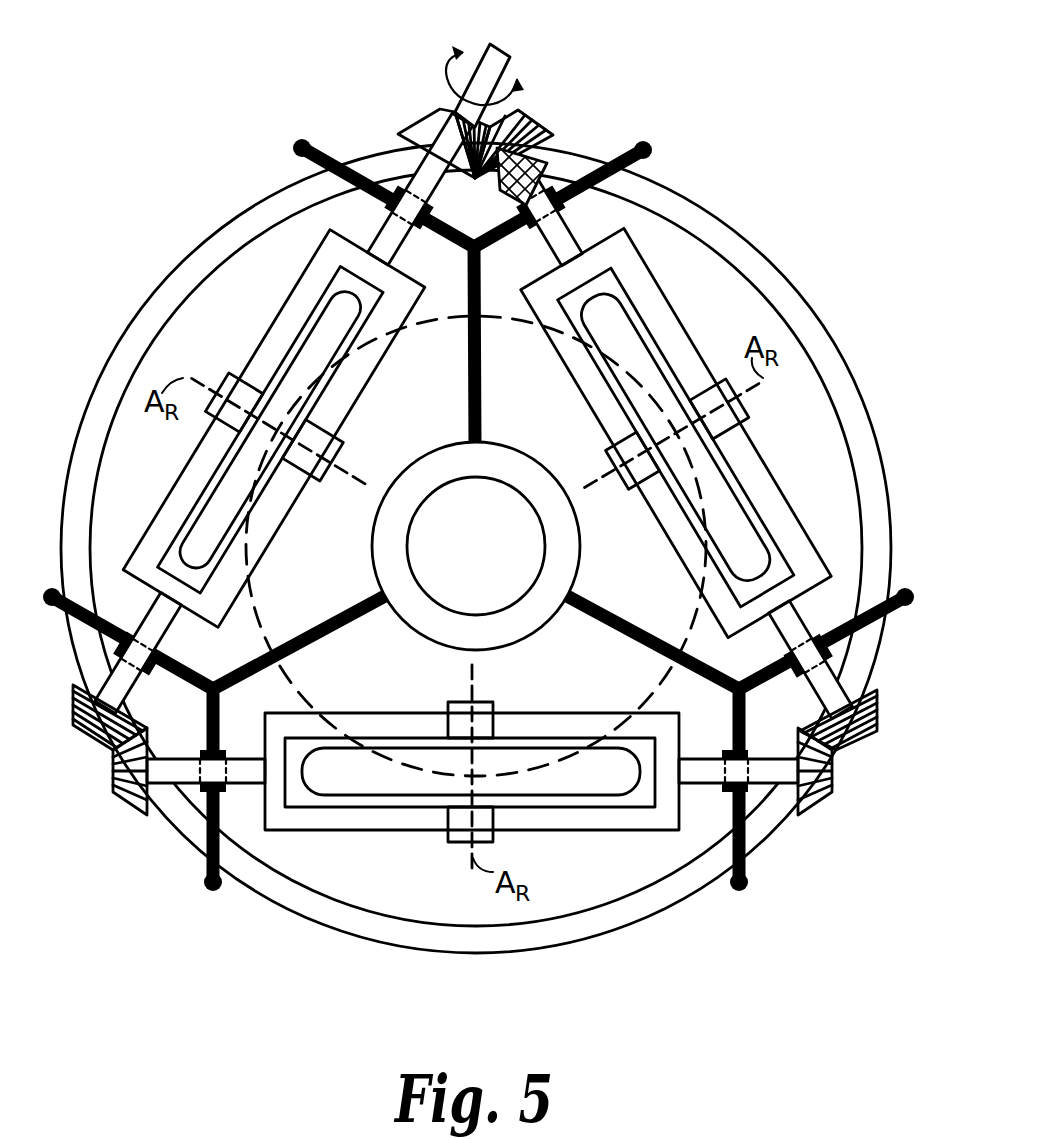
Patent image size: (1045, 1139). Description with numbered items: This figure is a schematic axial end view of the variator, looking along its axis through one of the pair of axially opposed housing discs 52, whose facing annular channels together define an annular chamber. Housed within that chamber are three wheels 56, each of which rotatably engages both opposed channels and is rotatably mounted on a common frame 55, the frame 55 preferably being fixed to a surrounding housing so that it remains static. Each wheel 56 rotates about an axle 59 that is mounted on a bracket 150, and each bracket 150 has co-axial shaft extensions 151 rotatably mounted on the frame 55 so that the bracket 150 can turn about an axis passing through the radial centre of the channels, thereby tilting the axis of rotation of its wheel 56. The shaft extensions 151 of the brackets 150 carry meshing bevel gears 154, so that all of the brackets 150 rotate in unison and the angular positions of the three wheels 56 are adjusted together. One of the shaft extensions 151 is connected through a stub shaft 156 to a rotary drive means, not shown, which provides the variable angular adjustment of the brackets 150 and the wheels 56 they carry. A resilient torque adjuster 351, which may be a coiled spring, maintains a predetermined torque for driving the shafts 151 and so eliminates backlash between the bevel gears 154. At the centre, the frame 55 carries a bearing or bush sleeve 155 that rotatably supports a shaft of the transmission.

The housing disc 52 is at (375, 930).
The frame 55 is at (625, 176).
The wheel 56 is at (292, 352).
The axle 59 is at (333, 447).
The bracket 150 is at (290, 300).
The shaft extension 151 is at (562, 238).
The bevel gear 154 is at (415, 130).
The bearing or bush sleeve 155 is at (510, 470).
The stub shaft 156 is at (500, 58).
The resilient torque adjuster 351 is at (553, 155).